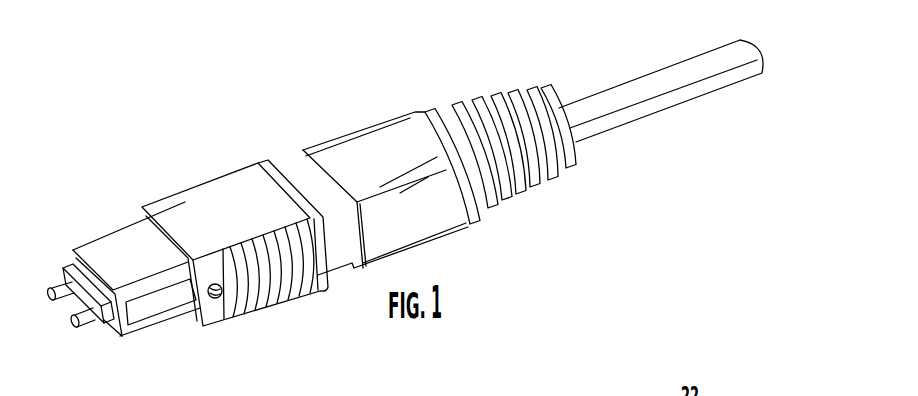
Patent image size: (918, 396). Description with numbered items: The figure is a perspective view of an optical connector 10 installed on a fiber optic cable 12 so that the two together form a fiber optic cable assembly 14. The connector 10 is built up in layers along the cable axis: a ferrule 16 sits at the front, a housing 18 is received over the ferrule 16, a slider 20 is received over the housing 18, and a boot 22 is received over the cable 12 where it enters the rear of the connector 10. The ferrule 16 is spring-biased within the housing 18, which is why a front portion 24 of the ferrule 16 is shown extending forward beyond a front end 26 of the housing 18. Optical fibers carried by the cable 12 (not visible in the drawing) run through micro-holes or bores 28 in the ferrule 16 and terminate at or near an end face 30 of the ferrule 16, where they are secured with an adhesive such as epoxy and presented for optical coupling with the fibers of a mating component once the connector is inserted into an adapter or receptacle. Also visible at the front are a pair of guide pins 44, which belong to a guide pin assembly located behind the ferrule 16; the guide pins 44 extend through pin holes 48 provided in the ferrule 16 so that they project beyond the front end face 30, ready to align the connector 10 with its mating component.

The connector 10 is at (182, 120).
The fiber optic cable 12 is at (593, 90).
The fiber optic cable assembly 14 is at (405, 92).
The ferrule 16 is at (68, 268).
The housing 18 is at (104, 233).
The slider 20 is at (220, 177).
The boot 22 is at (352, 133).
The front portion 24 is at (100, 321).
The front end 26 is at (118, 338).
The micro-holes or bores 28 is at (72, 300).
The end face 30 is at (63, 275).
The guide pins 44 is at (72, 324).
The pin holes 48 is at (130, 323).